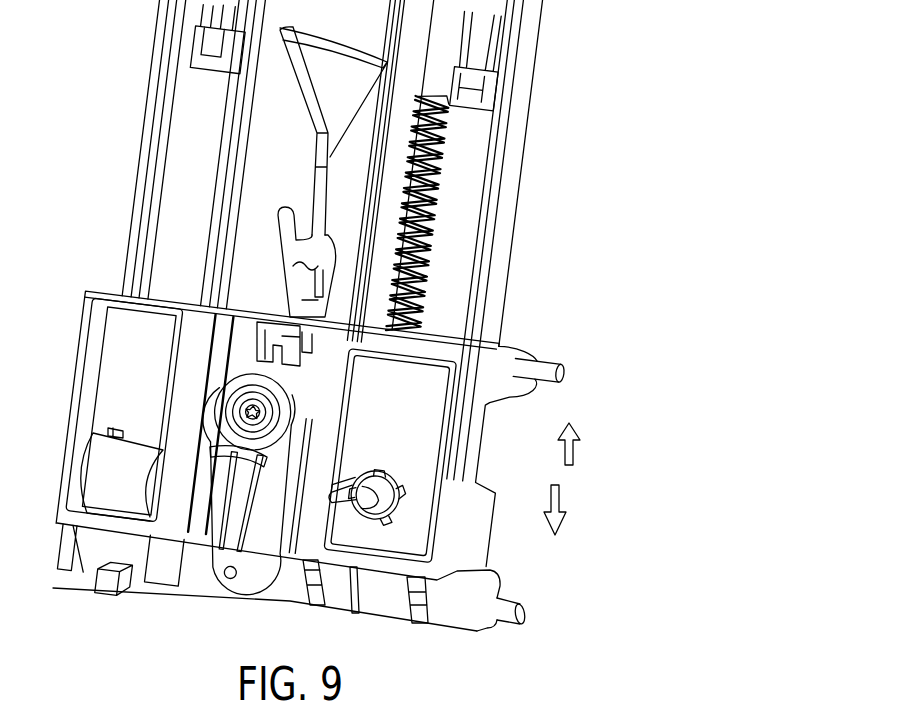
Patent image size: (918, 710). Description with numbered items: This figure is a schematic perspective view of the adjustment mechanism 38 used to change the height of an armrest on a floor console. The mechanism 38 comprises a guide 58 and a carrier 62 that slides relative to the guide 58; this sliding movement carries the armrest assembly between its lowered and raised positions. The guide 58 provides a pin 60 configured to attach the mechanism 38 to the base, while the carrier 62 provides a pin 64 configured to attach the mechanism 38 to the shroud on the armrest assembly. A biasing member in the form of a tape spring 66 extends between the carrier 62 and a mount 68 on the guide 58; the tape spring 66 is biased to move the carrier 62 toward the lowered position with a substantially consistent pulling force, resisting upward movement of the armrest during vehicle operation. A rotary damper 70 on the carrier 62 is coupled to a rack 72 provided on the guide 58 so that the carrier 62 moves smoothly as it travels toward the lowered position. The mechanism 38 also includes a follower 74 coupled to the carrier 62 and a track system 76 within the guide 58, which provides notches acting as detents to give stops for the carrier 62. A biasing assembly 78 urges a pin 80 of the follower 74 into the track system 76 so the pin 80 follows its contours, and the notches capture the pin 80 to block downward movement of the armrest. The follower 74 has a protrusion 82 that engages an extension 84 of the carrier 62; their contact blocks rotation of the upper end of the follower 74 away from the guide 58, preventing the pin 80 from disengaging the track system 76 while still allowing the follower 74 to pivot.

The mechanism 38 is at (534, 240).
The guide 58 is at (524, 101).
The pin 60 is at (509, 617).
The carrier 62 is at (466, 445).
The pin 64 is at (548, 381).
The tape spring 66 is at (96, 455).
The mount 68 is at (113, 589).
The rotary damper 70 is at (390, 508).
The rack 72 is at (420, 300).
The follower 74 is at (228, 602).
The track system 76 is at (287, 232).
The biasing assembly 78 is at (287, 396).
The pin 80 is at (233, 578).
The protrusion 82 is at (304, 358).
The extension 84 is at (262, 342).